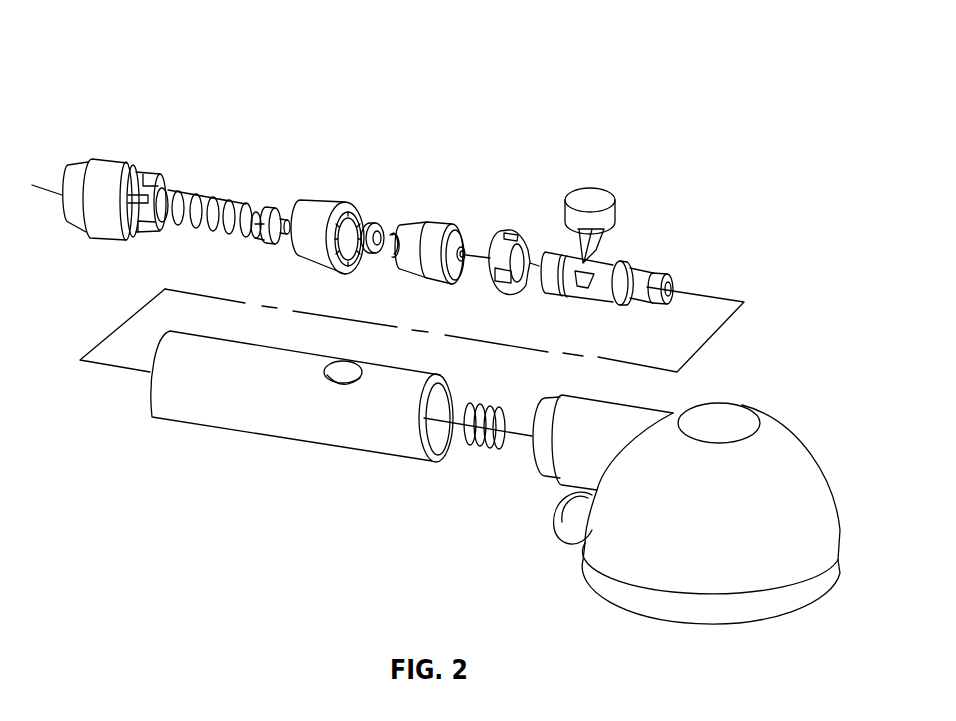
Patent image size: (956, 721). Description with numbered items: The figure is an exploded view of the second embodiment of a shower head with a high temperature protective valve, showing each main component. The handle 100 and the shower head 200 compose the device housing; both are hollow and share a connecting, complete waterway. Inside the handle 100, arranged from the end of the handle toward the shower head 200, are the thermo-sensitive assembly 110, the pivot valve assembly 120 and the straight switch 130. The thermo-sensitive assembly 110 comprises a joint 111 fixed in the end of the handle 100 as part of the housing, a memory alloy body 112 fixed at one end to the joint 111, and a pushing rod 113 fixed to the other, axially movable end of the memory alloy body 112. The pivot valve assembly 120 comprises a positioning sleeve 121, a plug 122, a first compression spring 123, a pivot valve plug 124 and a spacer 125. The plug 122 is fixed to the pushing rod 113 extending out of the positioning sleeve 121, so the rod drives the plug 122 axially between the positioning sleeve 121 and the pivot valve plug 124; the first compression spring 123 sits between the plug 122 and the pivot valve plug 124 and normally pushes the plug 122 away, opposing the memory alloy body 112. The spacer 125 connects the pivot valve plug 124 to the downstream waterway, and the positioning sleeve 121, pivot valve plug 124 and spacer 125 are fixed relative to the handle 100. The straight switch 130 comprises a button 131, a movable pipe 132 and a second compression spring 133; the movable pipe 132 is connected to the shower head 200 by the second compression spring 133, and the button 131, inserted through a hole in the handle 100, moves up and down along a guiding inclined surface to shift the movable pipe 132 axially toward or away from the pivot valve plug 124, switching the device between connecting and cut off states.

The handle 100 is at (277, 423).
The thermo-sensitive assembly 110 is at (280, 108).
The joint 111 is at (110, 163).
The memory alloy body 112 is at (214, 205).
The pushing rod 113 is at (272, 207).
The pivot valve assembly 120 is at (530, 140).
The positioning sleeve 121 is at (350, 203).
The plug 122 is at (377, 222).
The first compression spring 123 is at (400, 233).
The pivot valve plug 124 is at (450, 223).
The spacer 125 is at (513, 231).
The straight switch 130 is at (550, 147).
The button 131 is at (593, 195).
The movable pipe 132 is at (555, 281).
The second compression spring 133 is at (468, 441).
The shower head 200 is at (662, 608).